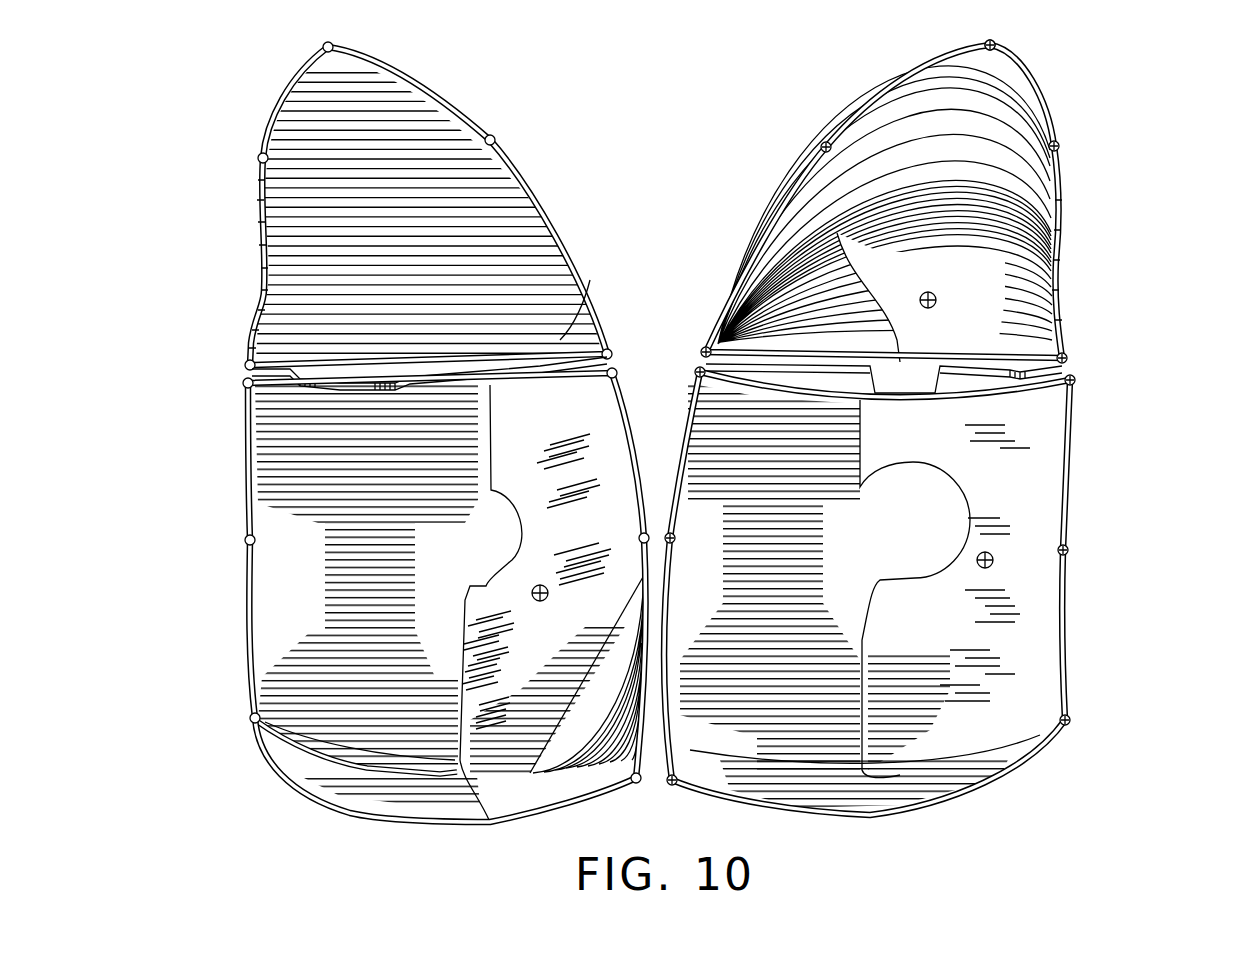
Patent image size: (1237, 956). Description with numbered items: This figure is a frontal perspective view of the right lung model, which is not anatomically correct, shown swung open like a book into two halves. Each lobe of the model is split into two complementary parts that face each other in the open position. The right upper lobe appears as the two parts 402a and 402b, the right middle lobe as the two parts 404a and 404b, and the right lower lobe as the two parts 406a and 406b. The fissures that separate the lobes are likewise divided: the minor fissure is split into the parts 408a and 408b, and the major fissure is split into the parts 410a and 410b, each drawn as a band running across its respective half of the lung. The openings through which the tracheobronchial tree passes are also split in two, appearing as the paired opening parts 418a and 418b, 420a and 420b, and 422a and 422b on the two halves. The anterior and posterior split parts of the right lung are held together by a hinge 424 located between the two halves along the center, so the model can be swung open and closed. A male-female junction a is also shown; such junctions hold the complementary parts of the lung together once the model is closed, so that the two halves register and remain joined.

The right upper lobe part 402a is at (350, 165).
The opening part 420a is at (262, 262).
The opening part 418a is at (330, 382).
The minor fissure part 408a is at (553, 363).
The right lower lobe part 406a is at (290, 575).
The major fissure part 410a is at (320, 640).
The opening part 422a is at (522, 548).
The right middle lobe part 404a is at (548, 690).
The hinge 424 is at (672, 772).
The right upper lobe part 402b is at (980, 265).
The opening part 420b is at (1056, 235).
The opening part 418b is at (995, 365).
The minor fissure part 408b is at (837, 270).
The male-female junction a is at (998, 45).
The right lower lobe part 406b is at (808, 720).
The major fissure part 410b is at (1010, 614).
The opening part 422b is at (950, 475).
The right middle lobe part 404b is at (1055, 478).